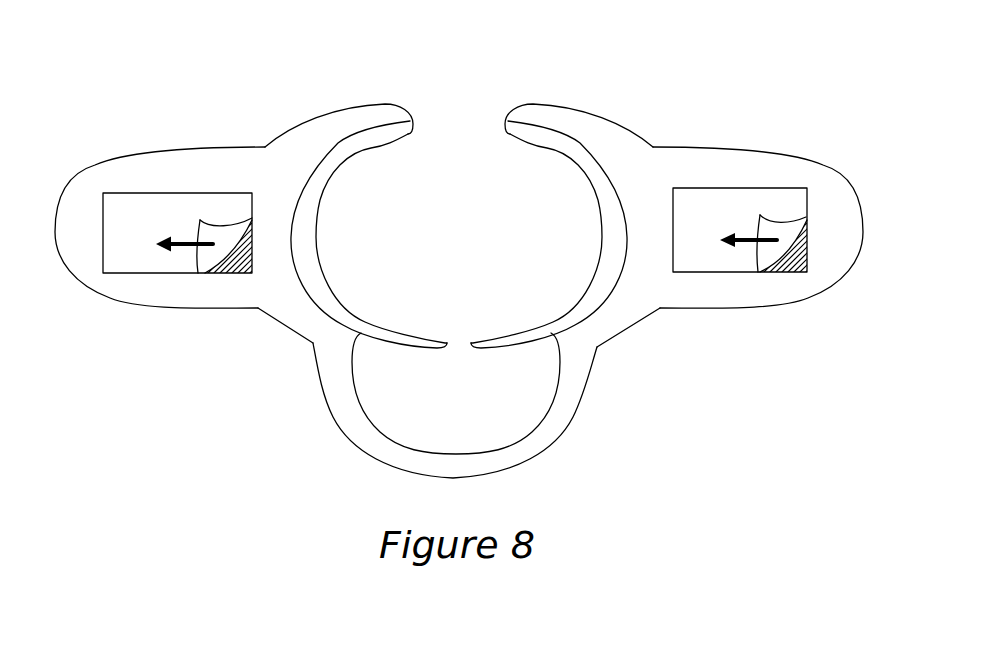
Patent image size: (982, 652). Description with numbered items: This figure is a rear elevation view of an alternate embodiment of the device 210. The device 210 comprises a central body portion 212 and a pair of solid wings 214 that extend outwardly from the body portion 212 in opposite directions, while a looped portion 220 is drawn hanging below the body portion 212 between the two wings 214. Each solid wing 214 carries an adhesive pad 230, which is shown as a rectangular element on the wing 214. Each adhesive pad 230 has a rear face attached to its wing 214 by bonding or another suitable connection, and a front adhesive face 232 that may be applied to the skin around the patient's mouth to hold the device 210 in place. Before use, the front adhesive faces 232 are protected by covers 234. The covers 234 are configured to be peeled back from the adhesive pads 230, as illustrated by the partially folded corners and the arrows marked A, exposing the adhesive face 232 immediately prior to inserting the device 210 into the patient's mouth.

The device 210 is at (380, 57).
The body portion 212 is at (578, 128).
The solid wings 214 is at (197, 298).
The hinge loop 220 is at (343, 313).
The adhesive pad 230 is at (228, 190).
The front adhesive face 232 is at (246, 262).
The covers 234 is at (145, 212).